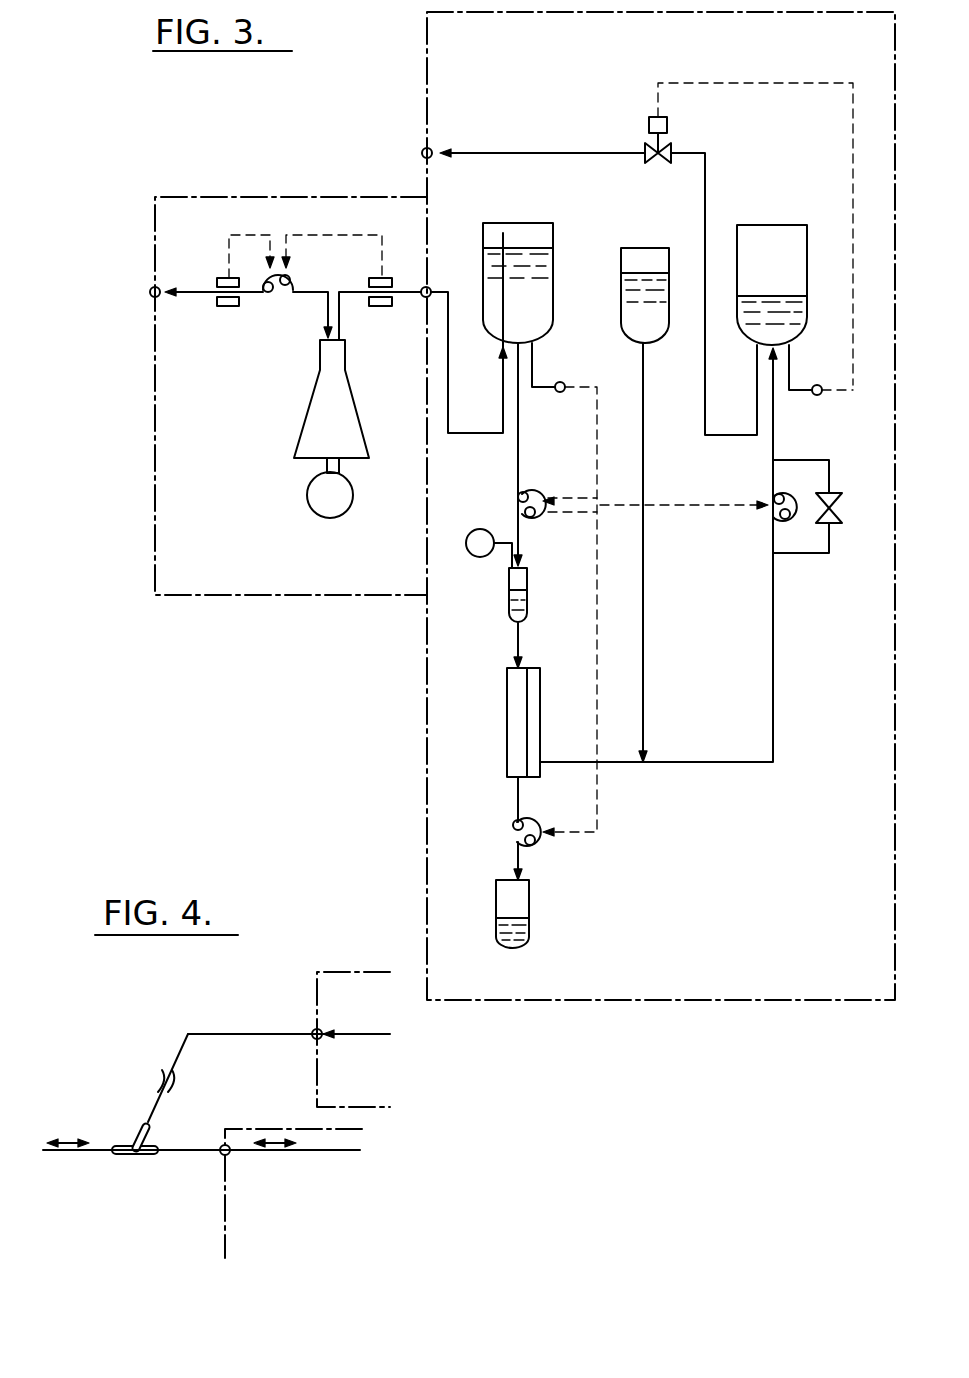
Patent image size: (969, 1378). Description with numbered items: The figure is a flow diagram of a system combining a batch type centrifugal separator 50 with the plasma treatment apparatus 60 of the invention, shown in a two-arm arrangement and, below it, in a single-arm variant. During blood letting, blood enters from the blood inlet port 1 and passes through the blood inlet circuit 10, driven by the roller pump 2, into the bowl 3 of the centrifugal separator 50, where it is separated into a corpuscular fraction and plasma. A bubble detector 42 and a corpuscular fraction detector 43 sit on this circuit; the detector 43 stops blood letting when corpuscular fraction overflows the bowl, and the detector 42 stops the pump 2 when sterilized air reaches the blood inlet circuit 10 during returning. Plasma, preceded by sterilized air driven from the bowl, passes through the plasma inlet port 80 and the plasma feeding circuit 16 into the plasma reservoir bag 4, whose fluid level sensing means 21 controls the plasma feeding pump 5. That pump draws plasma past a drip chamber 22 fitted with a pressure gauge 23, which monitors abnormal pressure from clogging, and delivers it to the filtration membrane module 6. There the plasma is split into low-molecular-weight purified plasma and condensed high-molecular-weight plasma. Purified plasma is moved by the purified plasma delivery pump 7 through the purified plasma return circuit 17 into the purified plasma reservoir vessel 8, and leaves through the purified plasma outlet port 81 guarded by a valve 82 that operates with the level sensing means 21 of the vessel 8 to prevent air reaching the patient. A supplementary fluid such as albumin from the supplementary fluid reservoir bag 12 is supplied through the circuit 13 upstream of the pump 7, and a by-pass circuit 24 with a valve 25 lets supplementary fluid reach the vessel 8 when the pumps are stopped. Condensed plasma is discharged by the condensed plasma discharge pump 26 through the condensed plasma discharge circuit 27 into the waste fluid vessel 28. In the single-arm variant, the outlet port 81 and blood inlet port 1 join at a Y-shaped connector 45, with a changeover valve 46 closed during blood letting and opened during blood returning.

In FIG. 3, the blood inlet port 1 is at (151, 296).
In FIG. 4, the blood inlet port 1 is at (220, 1155).
In FIG. 3, the pump 2 is at (291, 279).
In FIG. 3, the bowl 3 is at (303, 420).
In FIG. 3, the plasma reservoir bag 4 is at (520, 223).
In FIG. 3, the plasma feeding pump 5 is at (536, 492).
In FIG. 3, the filtration membrane module 6 is at (507, 723).
In FIG. 3, the purified plasma delivery pump 7 is at (768, 517).
In FIG. 3, the purified plasma reservoir vessel 8 is at (782, 224).
In FIG. 3, the blood inlet circuit 10 is at (195, 290).
In FIG. 4, the blood inlet circuit 10 is at (302, 1152).
In FIG. 3, the supplementary fluid reservoir bag 12 is at (640, 247).
In FIG. 3, the circuit for supplying a supplementary fluid 13 is at (645, 620).
In FIG. 3, the plasma feeding circuit 16 is at (470, 434).
In FIG. 3, the purified plasma return circuit 17 is at (568, 152).
In FIG. 4, the purified plasma return circuit 17 is at (362, 1036).
In FIG. 3, the fluid level sensing means 21 is at (562, 381).
In FIG. 3, the drip chamber 22 is at (528, 592).
In FIG. 3, the pressure gauge 23 is at (483, 558).
In FIG. 3, the by-pass circuit 24 is at (815, 460).
In FIG. 3, the valve 25 is at (843, 508).
In FIG. 3, the condensed plasma discharge pump 26 is at (538, 846).
In FIG. 3, the condensed plasma discharge circuit 27 is at (514, 804).
In FIG. 3, the waste fluid vessel 28 is at (530, 912).
In FIG. 3, the bubble detector 42 is at (229, 307).
In FIG. 3, the corpuscular fraction detector 43 is at (383, 307).
In FIG. 4, the Y-shaped connector 45 is at (133, 1158).
In FIG. 4, the changeover valve 46 is at (160, 1085).
In FIG. 3, the centrifugal separator 50 is at (280, 596).
In FIG. 4, the centrifugal separator 50 is at (222, 1230).
In FIG. 3, the plasma treatment apparatus 60 is at (688, 1001).
In FIG. 4, the plasma treatment apparatus 60 is at (316, 995).
In FIG. 3, the plasma inlet port 80 is at (431, 290).
In FIG. 3, the purified plasma outlet port 81 is at (423, 150).
In FIG. 4, the purified plasma outlet port 81 is at (322, 1030).
In FIG. 3, the valve 82 is at (670, 150).